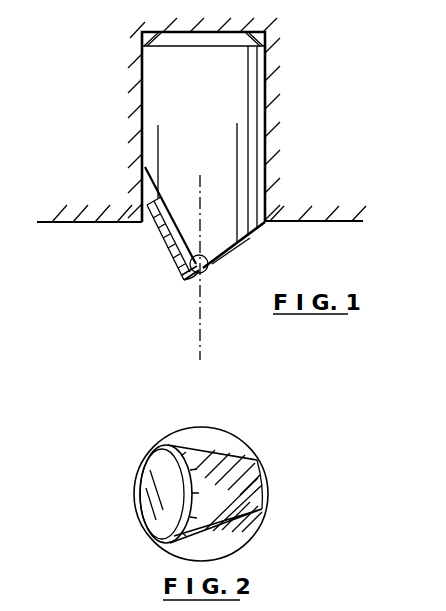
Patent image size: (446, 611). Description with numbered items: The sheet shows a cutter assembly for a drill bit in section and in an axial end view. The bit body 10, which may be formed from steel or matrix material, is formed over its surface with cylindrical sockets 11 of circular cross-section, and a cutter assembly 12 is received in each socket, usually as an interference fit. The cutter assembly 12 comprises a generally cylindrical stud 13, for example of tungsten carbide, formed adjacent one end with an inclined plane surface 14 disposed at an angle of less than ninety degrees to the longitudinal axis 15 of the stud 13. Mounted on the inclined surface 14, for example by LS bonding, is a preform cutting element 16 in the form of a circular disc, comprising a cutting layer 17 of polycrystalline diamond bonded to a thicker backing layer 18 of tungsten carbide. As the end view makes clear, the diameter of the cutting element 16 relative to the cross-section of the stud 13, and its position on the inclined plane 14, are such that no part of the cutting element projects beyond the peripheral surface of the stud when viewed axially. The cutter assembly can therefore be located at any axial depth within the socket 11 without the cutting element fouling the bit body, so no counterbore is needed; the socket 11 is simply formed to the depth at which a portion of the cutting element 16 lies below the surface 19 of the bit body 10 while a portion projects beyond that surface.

In FIG. 1, the bit body 10 is at (318, 222).
In FIG. 1, the cylindrical socket 11 is at (142, 125).
In FIG. 1, the cutter assembly 12 is at (236, 161).
In FIG. 1, the stud 13 is at (240, 113).
In FIG. 2, the stud 13 is at (235, 455).
In FIG. 1, the inclined plane surface 14 is at (143, 180).
In FIG. 1, the longitudinal axis 15 is at (203, 221).
In FIG. 1, the preform cutting element 16 is at (167, 233).
In FIG. 2, the preform cutting element 16 is at (167, 497).
In FIG. 1, the cutting layer 17 is at (177, 268).
In FIG. 1, the backing layer 18 is at (199, 278).
In FIG. 1, the surface of the bit body 19 is at (92, 226).